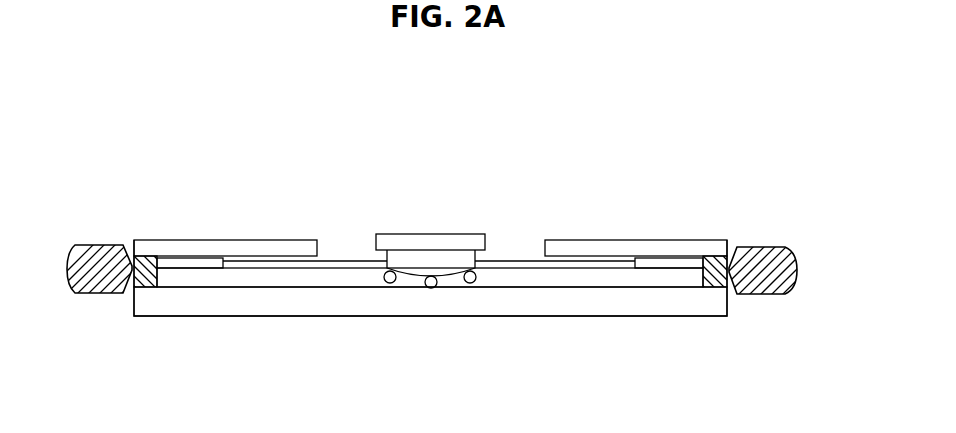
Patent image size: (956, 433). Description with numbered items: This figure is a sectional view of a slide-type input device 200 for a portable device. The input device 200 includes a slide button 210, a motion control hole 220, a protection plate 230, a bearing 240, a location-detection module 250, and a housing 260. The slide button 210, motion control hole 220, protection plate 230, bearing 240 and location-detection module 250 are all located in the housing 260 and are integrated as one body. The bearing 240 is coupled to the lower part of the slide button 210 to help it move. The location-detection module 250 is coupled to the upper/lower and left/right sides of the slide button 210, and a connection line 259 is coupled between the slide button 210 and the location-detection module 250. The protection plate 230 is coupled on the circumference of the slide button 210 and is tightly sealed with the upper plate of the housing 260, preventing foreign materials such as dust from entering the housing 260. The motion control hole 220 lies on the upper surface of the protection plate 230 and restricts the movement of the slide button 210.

The input device 200 is at (717, 151).
The slide button 210 is at (463, 238).
The motion control hole 220 is at (361, 251).
The protection plate 230 is at (511, 262).
The bearing 240 is at (392, 283).
The location-detection module 250 is at (765, 250).
The connection line 259 is at (610, 262).
The housing 260 is at (520, 306).